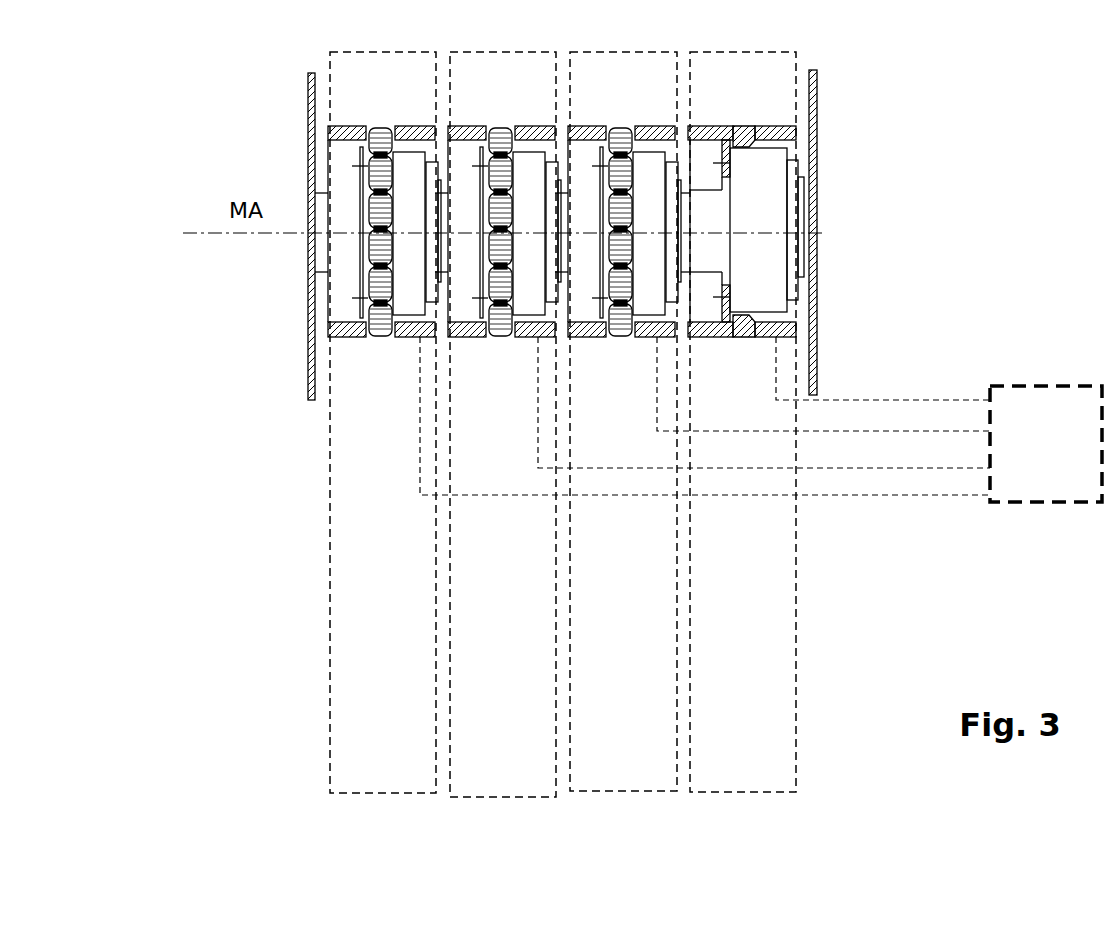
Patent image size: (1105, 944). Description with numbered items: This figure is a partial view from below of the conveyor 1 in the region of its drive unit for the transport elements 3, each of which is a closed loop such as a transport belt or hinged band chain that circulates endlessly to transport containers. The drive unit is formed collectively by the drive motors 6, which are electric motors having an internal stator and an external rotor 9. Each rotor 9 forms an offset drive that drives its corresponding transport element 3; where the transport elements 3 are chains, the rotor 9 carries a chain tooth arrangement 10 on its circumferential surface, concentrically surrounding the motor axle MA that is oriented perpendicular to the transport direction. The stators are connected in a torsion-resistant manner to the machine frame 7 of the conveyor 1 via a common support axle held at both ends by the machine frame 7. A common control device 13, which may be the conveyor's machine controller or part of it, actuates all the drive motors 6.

The conveyor 1 is at (238, 152).
The transport element 3 is at (368, 330).
The drive motor 6 is at (328, 297).
The machine frame 7 is at (304, 326).
The external rotor 9 is at (775, 258).
The chain tooth arrangement 10 is at (625, 137).
The common control device 13 is at (1033, 456).